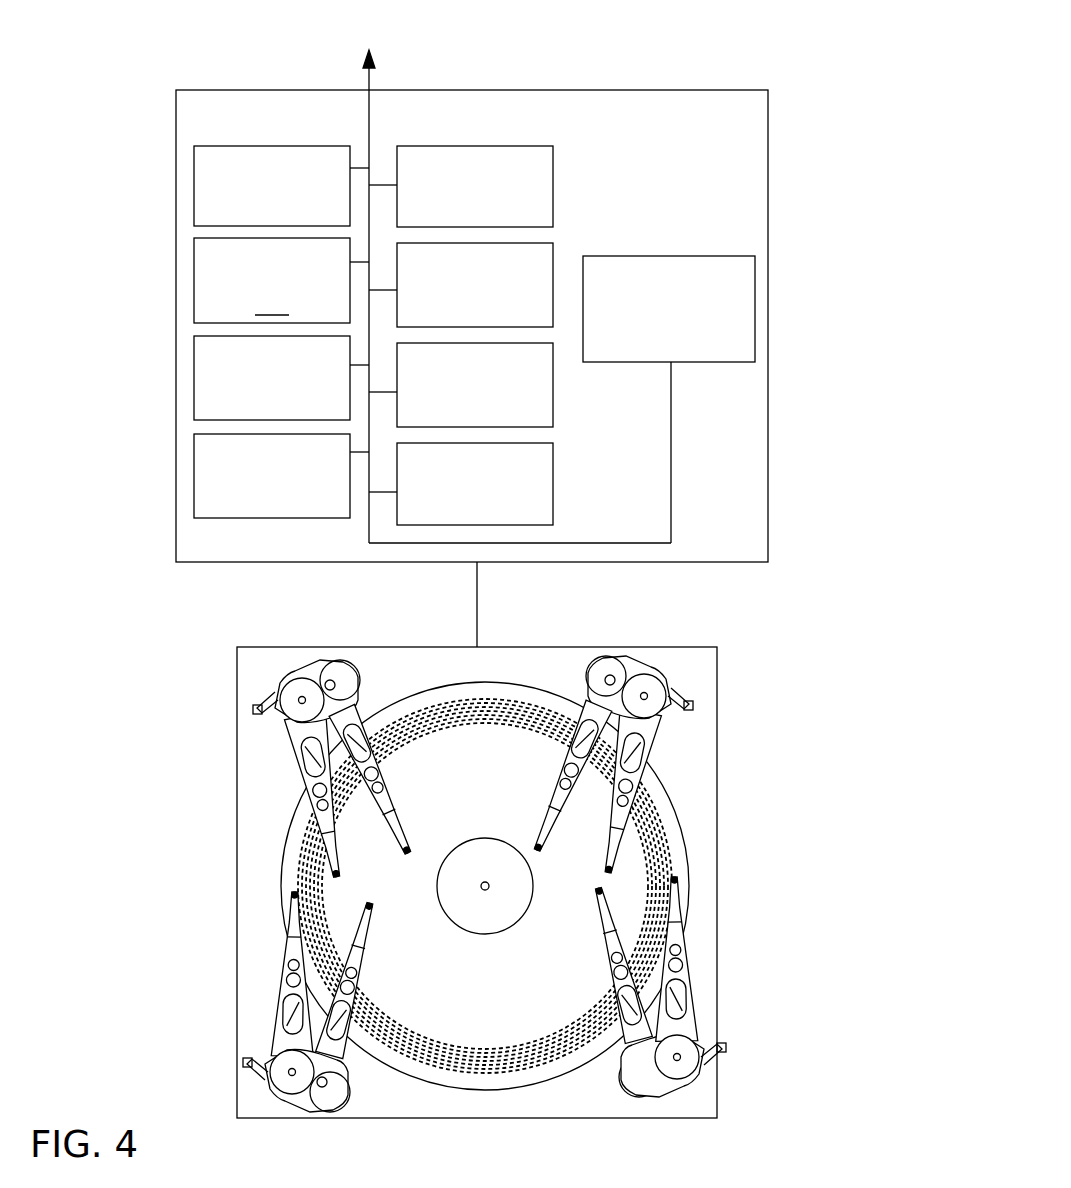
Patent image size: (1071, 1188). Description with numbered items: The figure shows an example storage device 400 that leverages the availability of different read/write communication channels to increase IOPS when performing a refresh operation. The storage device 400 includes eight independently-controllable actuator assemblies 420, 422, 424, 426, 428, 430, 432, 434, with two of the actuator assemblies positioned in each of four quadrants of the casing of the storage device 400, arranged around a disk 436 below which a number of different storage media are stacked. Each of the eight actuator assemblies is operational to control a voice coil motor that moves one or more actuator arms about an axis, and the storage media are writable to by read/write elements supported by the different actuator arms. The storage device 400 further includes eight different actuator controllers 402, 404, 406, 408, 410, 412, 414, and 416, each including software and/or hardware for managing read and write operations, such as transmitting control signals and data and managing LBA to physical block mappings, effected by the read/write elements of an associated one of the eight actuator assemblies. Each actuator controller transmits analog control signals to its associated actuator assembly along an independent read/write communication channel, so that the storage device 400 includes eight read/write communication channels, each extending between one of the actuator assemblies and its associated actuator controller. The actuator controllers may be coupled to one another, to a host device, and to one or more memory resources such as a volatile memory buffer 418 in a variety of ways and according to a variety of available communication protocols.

The storage device 400 is at (714, 66).
The actuator controller 402 is at (255, 221).
The actuator controller 404 is at (458, 221).
The actuator controller 406 is at (721, 121).
The actuator controller 408 is at (255, 413).
The actuator controller 410 is at (255, 511).
The actuator controller 412 is at (458, 319).
The actuator controller 414 is at (458, 419).
The actuator controller 416 is at (458, 519).
The volatile memory buffer 418 is at (652, 344).
The actuator assembly 420 is at (690, 732).
The actuator assembly 422 is at (567, 676).
The actuator assembly 424 is at (747, 1034).
The actuator assembly 426 is at (603, 1079).
The actuator assembly 428 is at (253, 1035).
The actuator assembly 430 is at (366, 1091).
The actuator assembly 432 is at (278, 745).
The actuator assembly 434 is at (365, 680).
The disk 436 is at (473, 993).